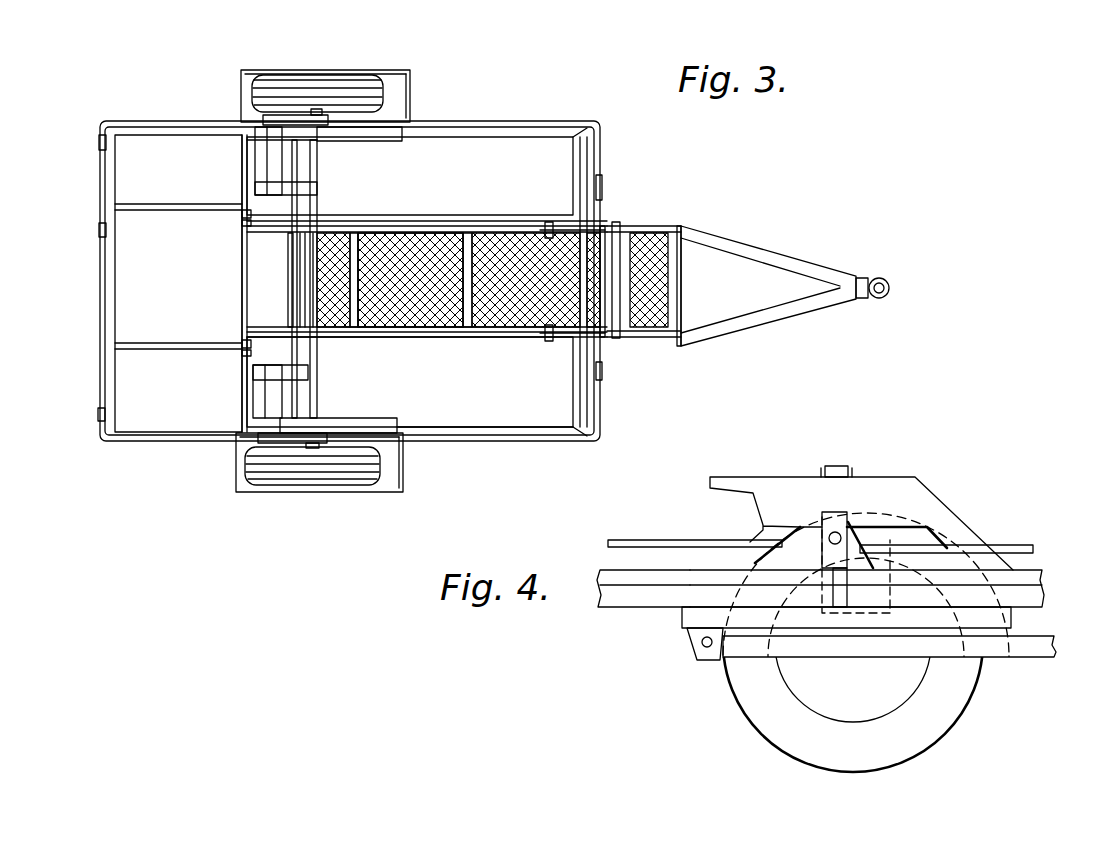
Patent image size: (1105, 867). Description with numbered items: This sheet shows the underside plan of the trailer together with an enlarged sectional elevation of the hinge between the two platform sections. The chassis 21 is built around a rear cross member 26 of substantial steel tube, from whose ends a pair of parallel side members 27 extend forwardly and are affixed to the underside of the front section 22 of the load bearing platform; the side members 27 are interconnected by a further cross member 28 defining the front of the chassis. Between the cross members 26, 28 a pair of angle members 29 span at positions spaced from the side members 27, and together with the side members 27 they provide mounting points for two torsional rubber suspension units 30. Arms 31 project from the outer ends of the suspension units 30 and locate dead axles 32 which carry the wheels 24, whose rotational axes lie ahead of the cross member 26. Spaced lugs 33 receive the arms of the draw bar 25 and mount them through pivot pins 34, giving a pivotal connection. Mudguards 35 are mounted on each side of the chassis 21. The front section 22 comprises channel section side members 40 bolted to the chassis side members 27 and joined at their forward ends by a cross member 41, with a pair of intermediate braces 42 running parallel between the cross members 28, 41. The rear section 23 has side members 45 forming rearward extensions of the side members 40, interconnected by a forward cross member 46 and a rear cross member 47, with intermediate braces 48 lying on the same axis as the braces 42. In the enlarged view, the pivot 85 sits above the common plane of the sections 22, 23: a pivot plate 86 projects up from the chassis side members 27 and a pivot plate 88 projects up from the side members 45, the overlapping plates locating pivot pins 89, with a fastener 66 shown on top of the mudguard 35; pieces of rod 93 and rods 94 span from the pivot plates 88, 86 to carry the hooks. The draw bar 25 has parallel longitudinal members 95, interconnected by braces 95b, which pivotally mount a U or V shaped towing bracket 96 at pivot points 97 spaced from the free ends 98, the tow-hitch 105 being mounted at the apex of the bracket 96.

In FIG. 3, the chassis 21 is at (222, 402).
In FIG. 4, the chassis 21 is at (748, 657).
In FIG. 3, the front section of the load bearing platform 22 is at (466, 117).
In FIG. 4, the front section of the load bearing platform 22 is at (1030, 598).
In FIG. 3, the rear section of the load bearing platform 23 is at (167, 110).
In FIG. 4, the rear section of the load bearing platform 23 is at (640, 600).
In FIG. 3, the wheels 24 is at (378, 93).
In FIG. 3, the draw bar 25 is at (743, 222).
In FIG. 4, the draw bar 25 is at (1003, 658).
In FIG. 3, the cross member 26 is at (245, 433).
In FIG. 3, the side members 27 is at (395, 137).
In FIG. 4, the side members 27 is at (1000, 621).
In FIG. 3, the further cross member 28 is at (318, 403).
In FIG. 3, the angle members 29 is at (312, 188).
In FIG. 3, the torsional rubber suspension units 30 is at (268, 155).
In FIG. 3, the arms 31 is at (300, 118).
In FIG. 3, the dead axles 32 is at (318, 108).
In FIG. 3, the lugs 33 is at (242, 213).
In FIG. 3, the pivot pins 34 is at (243, 226).
In FIG. 4, the pivot pins 34 is at (700, 640).
In FIG. 4, the mudguards 35 is at (935, 515).
In FIG. 3, the side members 40 is at (545, 125).
In FIG. 3, the cross member 41 is at (585, 265).
In FIG. 3, the intermediate braces 42 is at (535, 212).
In FIG. 3, the side members 45 is at (143, 130).
In FIG. 3, the cross member 46 is at (290, 270).
In FIG. 3, the cross member 47 is at (108, 372).
In FIG. 3, the intermediate braces 48 is at (128, 205).
In FIG. 4, the nut 66 is at (840, 463).
In FIG. 4, the pivot 85 is at (838, 508).
In FIG. 4, the pivot plate 86 is at (852, 545).
In FIG. 4, the pivot plate 88 is at (812, 527).
In FIG. 4, the pivot pins 89 is at (838, 533).
In FIG. 4, the rod 93 is at (656, 540).
In FIG. 4, the rods 94 is at (1012, 548).
In FIG. 3, the longitudinal members 95 is at (415, 228).
In FIG. 3, the center mesh panel 95b is at (355, 330).
In FIG. 3, the towing bracket 96 is at (785, 263).
In FIG. 3, the pivot points 97 is at (553, 228).
In FIG. 3, the free ends 98 is at (615, 230).
In FIG. 3, the hitch ring 105 is at (888, 283).